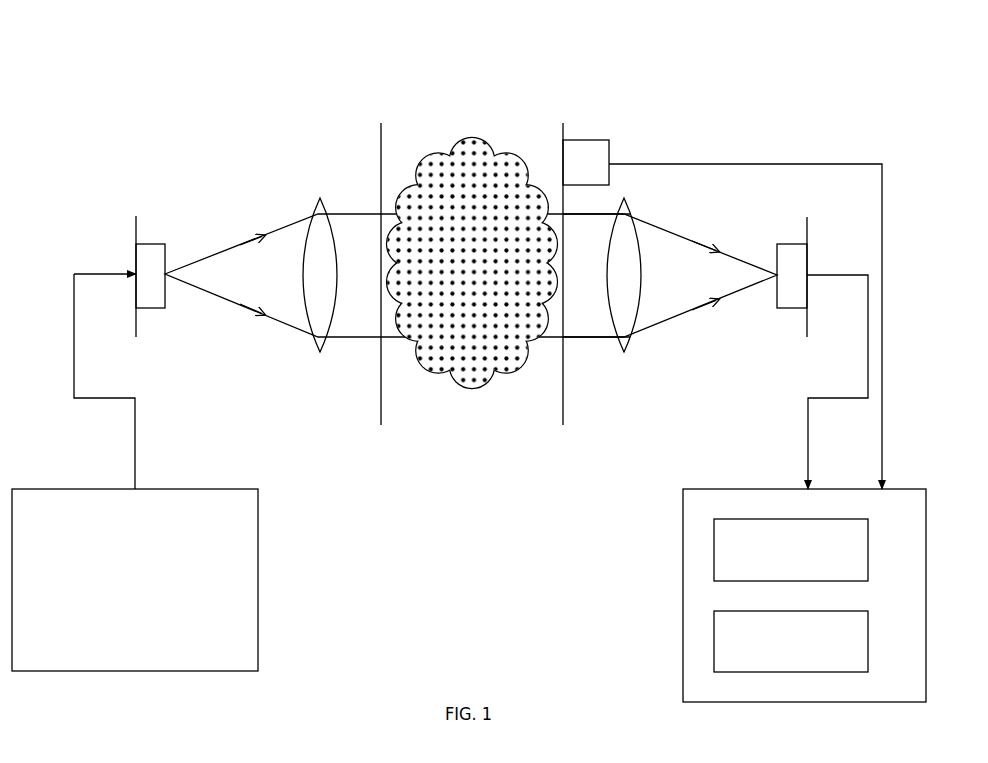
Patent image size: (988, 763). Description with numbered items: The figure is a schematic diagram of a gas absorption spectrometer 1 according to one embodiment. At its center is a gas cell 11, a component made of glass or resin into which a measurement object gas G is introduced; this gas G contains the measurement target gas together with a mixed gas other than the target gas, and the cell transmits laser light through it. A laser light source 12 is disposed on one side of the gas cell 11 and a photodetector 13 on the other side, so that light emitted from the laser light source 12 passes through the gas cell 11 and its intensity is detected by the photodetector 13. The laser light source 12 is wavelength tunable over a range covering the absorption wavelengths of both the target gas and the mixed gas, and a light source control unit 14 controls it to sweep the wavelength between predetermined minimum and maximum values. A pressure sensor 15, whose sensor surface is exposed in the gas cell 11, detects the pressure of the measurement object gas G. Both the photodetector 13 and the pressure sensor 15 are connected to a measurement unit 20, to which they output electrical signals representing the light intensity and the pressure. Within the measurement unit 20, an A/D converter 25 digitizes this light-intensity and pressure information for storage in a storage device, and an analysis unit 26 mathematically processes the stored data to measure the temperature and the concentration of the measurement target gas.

The gas absorption spectrometer 1 is at (834, 67).
The gas cell 11 is at (381, 402).
The laser light source 12 is at (156, 309).
The photodetector 13 is at (787, 309).
The light source control unit 14 is at (258, 530).
The pressure sensor 15 is at (581, 140).
The measurement unit 20 is at (760, 587).
The A/D converter 25 is at (714, 546).
The analysis unit 26 is at (714, 638).
The measurement object gas G is at (470, 139).